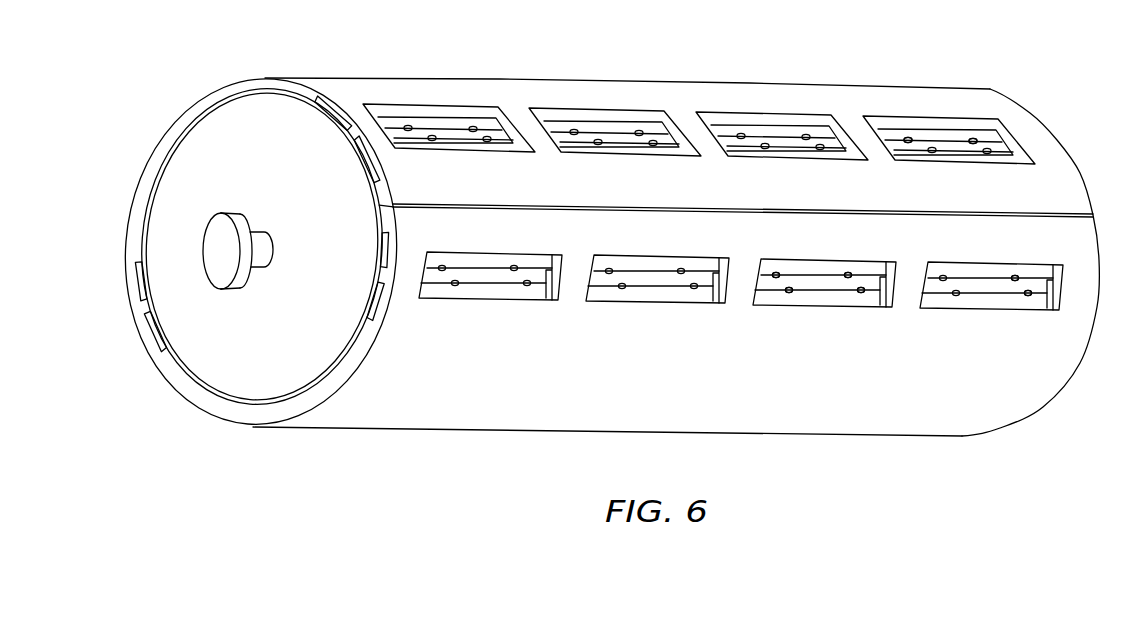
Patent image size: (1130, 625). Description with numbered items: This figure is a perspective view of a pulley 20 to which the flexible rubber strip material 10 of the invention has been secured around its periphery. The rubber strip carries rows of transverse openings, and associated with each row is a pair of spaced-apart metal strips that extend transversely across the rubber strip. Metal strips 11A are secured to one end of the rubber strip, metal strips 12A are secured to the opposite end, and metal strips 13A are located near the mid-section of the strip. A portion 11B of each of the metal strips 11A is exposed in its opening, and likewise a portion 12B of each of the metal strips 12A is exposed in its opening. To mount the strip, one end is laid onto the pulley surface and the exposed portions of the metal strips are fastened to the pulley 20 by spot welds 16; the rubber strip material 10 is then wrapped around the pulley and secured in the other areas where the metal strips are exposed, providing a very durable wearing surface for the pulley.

The flexible rubber strip material 10 is at (1099, 193).
The pulley 20 is at (236, 133).
The metal strips 11A is at (346, 130).
The metal strips 12A is at (382, 250).
The metal strips 13A is at (144, 291).
The exposed portion of metal strip 11B is at (622, 152).
The exposed portion of metal strip 12B is at (487, 263).
The spot welds 16 is at (910, 141).